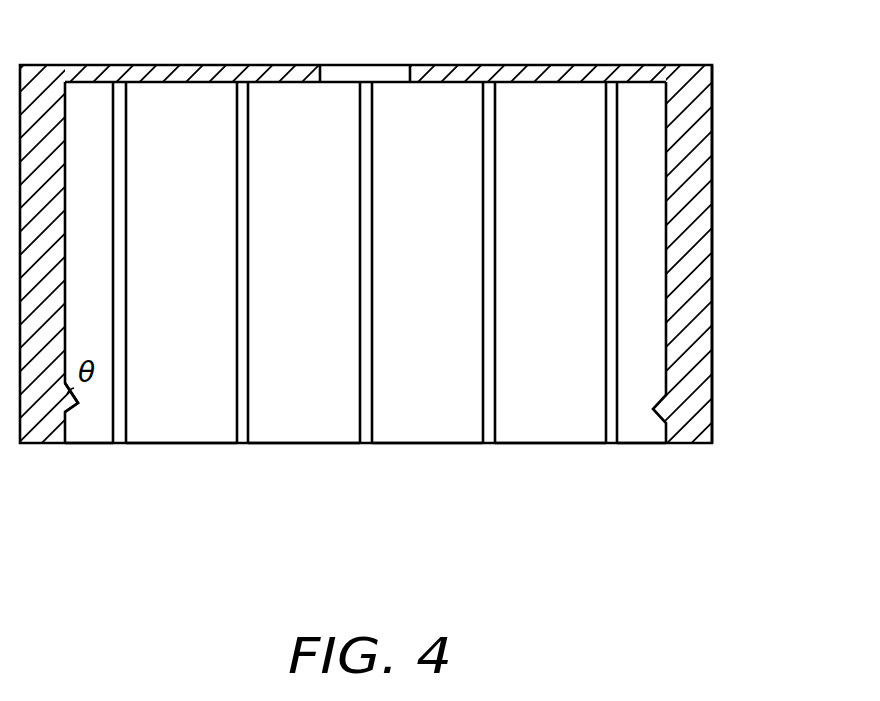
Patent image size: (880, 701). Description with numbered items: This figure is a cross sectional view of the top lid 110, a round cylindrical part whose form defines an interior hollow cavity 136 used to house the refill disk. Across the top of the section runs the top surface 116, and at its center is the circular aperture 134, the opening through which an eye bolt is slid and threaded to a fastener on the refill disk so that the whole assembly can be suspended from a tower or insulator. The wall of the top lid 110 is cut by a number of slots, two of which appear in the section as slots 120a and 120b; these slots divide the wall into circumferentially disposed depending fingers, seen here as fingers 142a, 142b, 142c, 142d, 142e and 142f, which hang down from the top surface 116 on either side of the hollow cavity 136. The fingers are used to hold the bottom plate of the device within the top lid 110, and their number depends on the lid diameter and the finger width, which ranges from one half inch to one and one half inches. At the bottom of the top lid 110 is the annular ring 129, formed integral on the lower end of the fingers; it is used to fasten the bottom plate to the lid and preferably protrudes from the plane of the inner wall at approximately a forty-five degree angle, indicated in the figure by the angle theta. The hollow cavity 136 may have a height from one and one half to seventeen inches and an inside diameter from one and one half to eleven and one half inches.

The top lid 110 is at (763, 97).
The top surface 116 is at (562, 67).
The slot 120a is at (120, 107).
The slot 120b is at (243, 113).
The annular ring 129 is at (76, 410).
The circular aperture 134 is at (388, 63).
The hollow cavity 136 is at (652, 262).
The finger 142a is at (102, 433).
The finger 142b is at (185, 433).
The finger 142c is at (300, 433).
The finger 142d is at (415, 433).
The finger 142e is at (532, 433).
The finger 142f is at (637, 435).